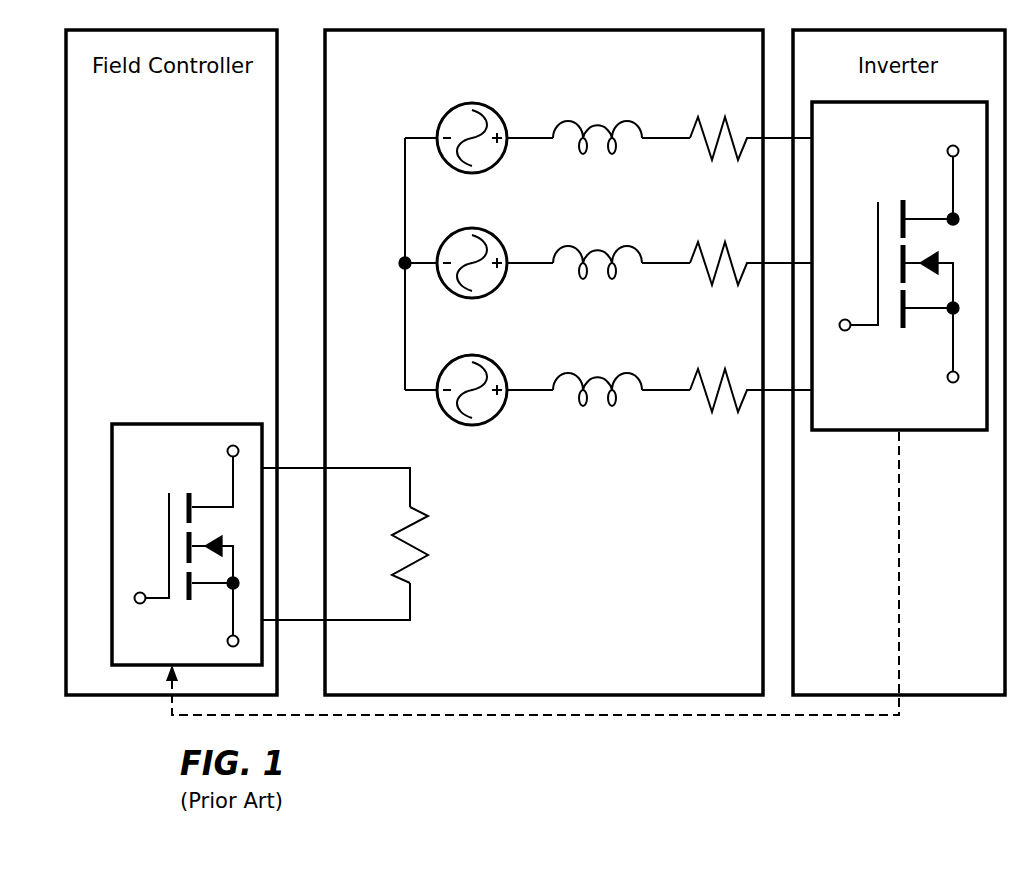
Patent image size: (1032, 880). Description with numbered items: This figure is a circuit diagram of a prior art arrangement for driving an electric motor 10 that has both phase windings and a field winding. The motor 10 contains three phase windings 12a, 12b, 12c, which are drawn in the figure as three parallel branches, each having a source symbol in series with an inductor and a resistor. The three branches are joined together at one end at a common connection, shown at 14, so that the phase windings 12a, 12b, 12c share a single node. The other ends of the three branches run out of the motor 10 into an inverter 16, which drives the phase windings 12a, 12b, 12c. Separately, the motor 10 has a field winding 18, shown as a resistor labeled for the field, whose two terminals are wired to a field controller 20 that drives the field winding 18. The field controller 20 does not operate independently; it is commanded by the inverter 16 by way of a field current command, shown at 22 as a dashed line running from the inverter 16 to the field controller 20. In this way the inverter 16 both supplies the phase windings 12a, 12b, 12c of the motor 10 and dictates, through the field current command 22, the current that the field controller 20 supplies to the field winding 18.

The motor 10 is at (457, 66).
The phase winding 12a is at (597, 121).
The phase winding 12b is at (597, 246).
The phase winding 12c is at (597, 373).
The connection of phase windings 14 is at (405, 220).
The inverter 16 is at (910, 411).
The field winding 18 is at (423, 550).
The field controller 20 is at (145, 459).
The field current command 22 is at (527, 717).